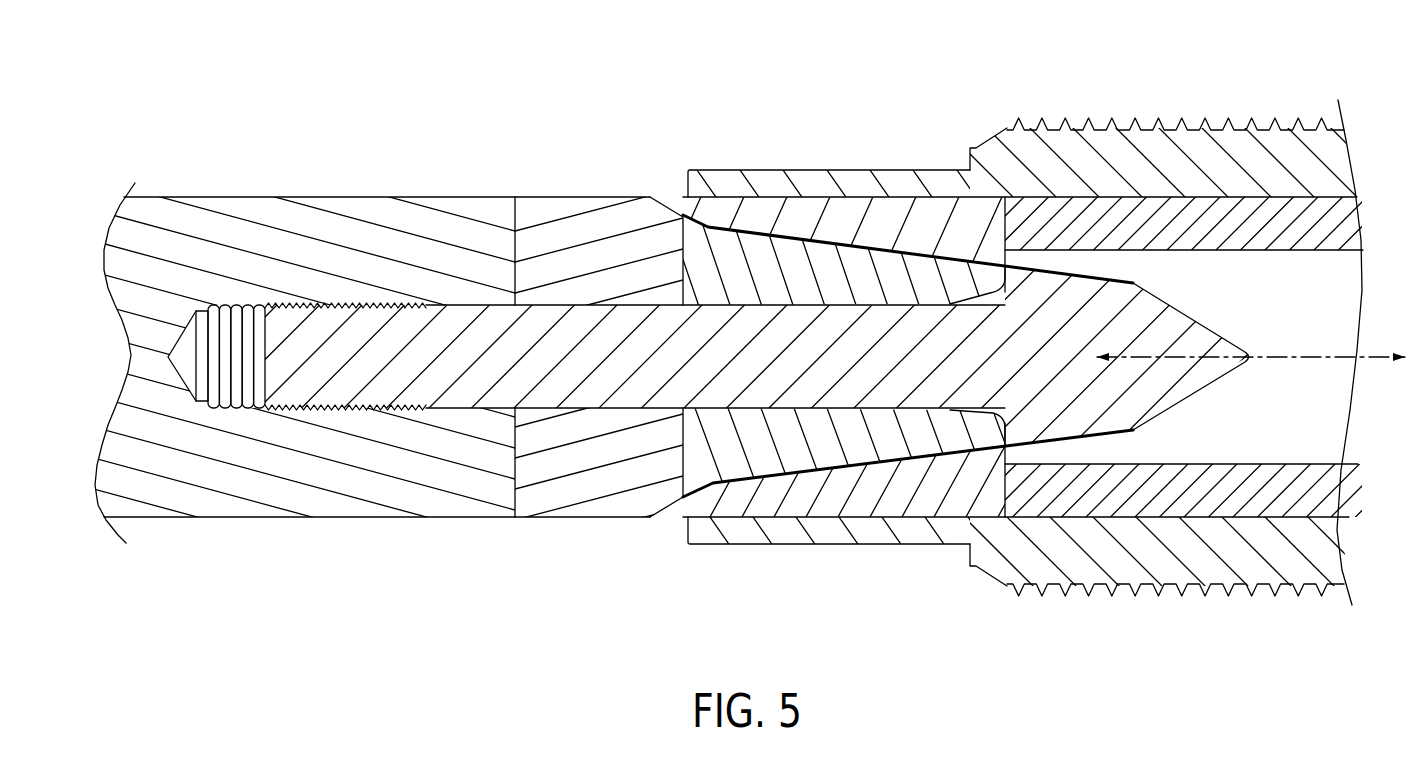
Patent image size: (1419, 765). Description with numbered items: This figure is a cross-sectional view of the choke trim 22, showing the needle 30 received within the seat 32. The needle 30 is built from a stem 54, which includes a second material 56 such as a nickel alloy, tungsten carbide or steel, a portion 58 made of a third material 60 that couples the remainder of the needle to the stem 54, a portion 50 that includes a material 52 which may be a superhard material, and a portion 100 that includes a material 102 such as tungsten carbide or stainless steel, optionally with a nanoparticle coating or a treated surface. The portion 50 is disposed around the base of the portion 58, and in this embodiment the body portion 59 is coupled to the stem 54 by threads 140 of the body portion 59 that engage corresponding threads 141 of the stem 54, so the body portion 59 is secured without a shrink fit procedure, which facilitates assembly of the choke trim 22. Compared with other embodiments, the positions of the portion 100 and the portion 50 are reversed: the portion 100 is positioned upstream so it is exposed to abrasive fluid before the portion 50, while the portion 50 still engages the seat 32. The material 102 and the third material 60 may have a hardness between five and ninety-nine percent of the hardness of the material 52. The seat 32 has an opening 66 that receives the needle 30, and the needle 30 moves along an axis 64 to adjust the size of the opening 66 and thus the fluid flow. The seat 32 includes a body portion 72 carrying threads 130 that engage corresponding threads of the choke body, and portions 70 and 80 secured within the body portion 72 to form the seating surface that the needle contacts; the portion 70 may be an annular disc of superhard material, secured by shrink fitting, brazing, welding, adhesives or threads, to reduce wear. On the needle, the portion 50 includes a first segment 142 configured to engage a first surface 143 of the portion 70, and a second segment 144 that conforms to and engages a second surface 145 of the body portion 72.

The choke trim 22 is at (1136, 44).
The needle 30 is at (366, 143).
The seat 32 is at (1262, 105).
The portion 50 is at (747, 170).
The material 52 is at (893, 292).
The stem 54 is at (253, 205).
The second material 56 is at (278, 266).
The portion 58 is at (1147, 302).
The body portion 59 is at (449, 327).
The third material 60 is at (1118, 336).
The axis 64 is at (1273, 357).
The opening 66 is at (1303, 422).
The portion 70 is at (867, 208).
The body portion 72 is at (997, 153).
The portion 80 is at (1208, 203).
The portion 100 is at (594, 255).
The material 102 is at (649, 276).
The threads 130 is at (1239, 600).
The threads 140 is at (341, 317).
The threads 141 is at (324, 418).
The first segment 142 is at (697, 204).
The first surface 143 is at (713, 208).
The second segment 144 is at (815, 255).
The second surface 145 is at (791, 222).